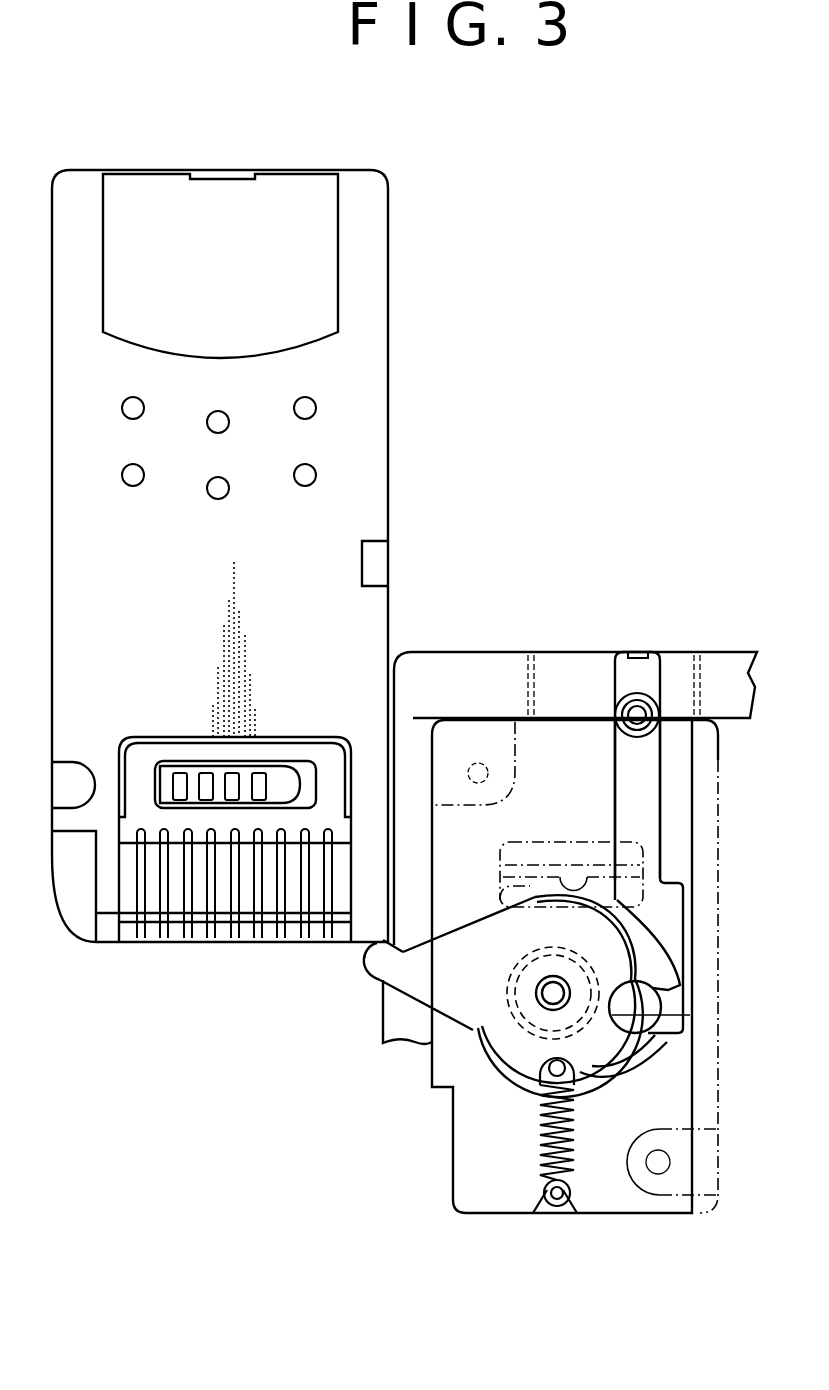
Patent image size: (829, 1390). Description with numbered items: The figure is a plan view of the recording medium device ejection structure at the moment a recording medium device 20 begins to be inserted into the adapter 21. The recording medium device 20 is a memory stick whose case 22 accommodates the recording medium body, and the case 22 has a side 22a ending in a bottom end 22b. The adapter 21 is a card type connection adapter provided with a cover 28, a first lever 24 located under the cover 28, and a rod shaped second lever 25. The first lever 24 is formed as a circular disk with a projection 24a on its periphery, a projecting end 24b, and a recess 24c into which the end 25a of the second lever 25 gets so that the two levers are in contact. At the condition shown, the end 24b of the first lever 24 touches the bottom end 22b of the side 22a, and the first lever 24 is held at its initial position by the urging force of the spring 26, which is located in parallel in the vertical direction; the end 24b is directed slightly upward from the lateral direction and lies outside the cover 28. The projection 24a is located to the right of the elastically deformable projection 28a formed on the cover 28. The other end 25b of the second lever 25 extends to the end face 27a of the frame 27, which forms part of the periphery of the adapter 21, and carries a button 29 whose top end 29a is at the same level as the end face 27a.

The recording medium device 20 is at (325, 278).
The adapter 21 is at (422, 1168).
The case 22 is at (358, 448).
The side 22a is at (390, 620).
The bottom end 22b is at (355, 948).
The first lever 24 is at (460, 1003).
The projection 24a is at (613, 897).
The end 24b is at (383, 967).
The recess 24c is at (680, 1017).
The second lever 25 is at (643, 790).
The end 25a is at (673, 1000).
The other end 25b is at (648, 763).
The spring 26 is at (577, 1137).
The frame 27 is at (430, 677).
The end face 27a is at (522, 650).
The cover 28 is at (500, 1183).
The projection 28a is at (495, 893).
The button 29 is at (627, 677).
The top end 29a is at (647, 650).